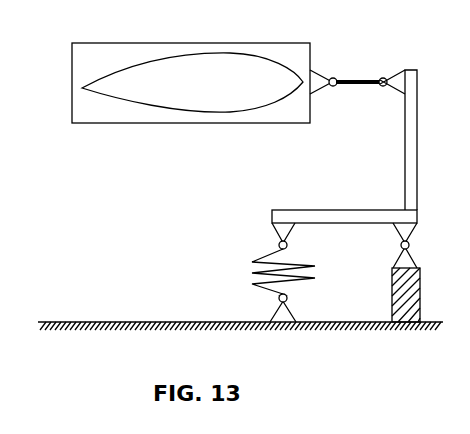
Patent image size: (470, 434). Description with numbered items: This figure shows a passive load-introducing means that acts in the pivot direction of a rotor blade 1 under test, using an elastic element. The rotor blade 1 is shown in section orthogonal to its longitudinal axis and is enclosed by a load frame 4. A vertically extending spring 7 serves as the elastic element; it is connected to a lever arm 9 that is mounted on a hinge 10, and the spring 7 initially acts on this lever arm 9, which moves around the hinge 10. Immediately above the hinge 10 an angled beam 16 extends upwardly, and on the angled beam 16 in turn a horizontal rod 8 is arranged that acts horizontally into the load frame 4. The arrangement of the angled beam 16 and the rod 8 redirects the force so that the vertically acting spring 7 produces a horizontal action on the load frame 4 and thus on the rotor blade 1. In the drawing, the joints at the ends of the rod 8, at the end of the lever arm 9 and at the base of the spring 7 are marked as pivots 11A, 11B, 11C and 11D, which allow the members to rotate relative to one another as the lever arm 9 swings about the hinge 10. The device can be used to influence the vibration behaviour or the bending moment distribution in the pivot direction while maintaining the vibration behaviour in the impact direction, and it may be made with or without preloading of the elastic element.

The rotor blade 1 is at (255, 55).
The load frame 4 is at (72, 75).
The spring 7 is at (250, 262).
The horizontal rod 8 is at (360, 88).
The lever arm 9 is at (330, 209).
The hinge 10 is at (410, 247).
The hinge 11A is at (381, 78).
The hinge 11B is at (333, 87).
The hinge 11C is at (288, 243).
The hinge 11D is at (276, 300).
The angled beam 16 is at (437, 161).